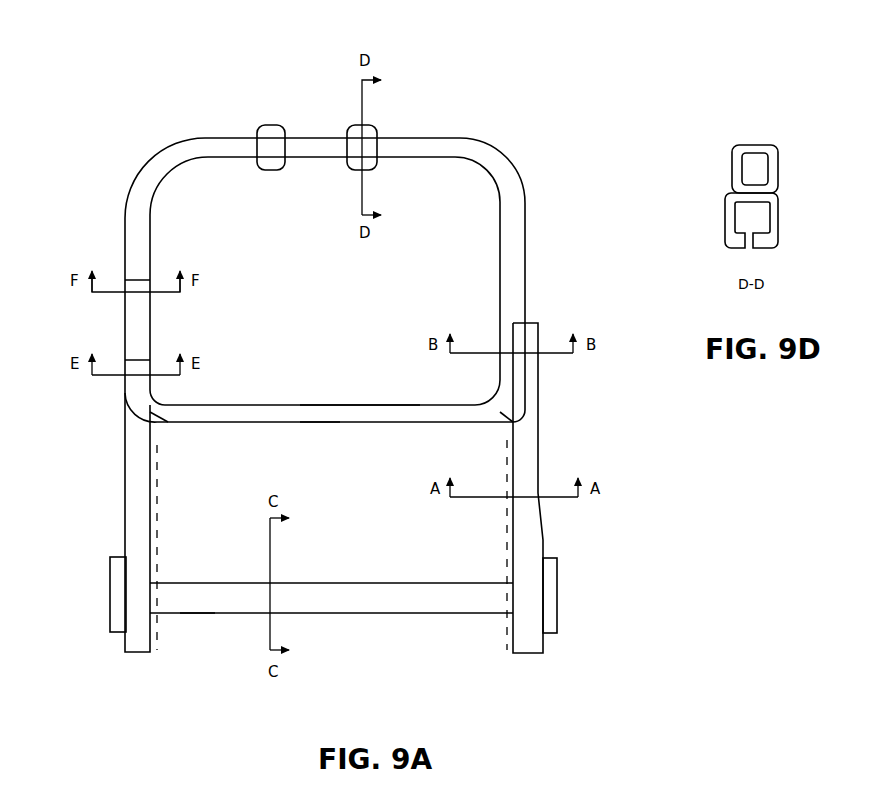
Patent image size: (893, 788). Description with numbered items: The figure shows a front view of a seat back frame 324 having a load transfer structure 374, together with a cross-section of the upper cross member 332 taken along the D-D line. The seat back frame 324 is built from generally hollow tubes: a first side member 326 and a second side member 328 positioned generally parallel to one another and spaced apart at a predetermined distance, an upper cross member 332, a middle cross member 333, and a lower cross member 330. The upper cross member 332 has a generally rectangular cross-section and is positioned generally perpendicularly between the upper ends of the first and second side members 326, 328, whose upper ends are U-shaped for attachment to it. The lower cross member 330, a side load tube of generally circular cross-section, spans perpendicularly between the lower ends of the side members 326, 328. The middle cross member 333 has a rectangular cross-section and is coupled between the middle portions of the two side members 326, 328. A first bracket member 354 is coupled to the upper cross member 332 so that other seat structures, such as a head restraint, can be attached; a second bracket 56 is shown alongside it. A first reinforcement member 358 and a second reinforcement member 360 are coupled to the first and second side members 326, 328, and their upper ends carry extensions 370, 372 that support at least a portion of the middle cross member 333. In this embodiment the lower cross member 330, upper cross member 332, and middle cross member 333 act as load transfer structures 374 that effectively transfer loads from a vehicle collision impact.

In FIG. 9A, the seat back frame 324 is at (200, 80).
In FIG. 9A, the upper cross member 332 is at (155, 160).
In FIG. 9D, the upper cross member 332 is at (733, 116).
In FIG. 9A, the middle cross member 333 is at (362, 404).
In FIG. 9A, the first bracket member 354 is at (268, 140).
In FIG. 9A, the connector 56 is at (355, 163).
In FIG. 9A, the first side member 326 is at (137, 457).
In FIG. 9A, the second side member 328 is at (525, 528).
In FIG. 9A, the lower cross member 330 is at (226, 604).
In FIG. 9A, the first reinforcement member 358 is at (150, 535).
In FIG. 9A, the second reinforcement member 360 is at (500, 530).
In FIG. 9A, the extension 370 is at (168, 426).
In FIG. 9A, the extension 372 is at (498, 430).
In FIG. 9A, the load transfer structure 374 is at (318, 426).